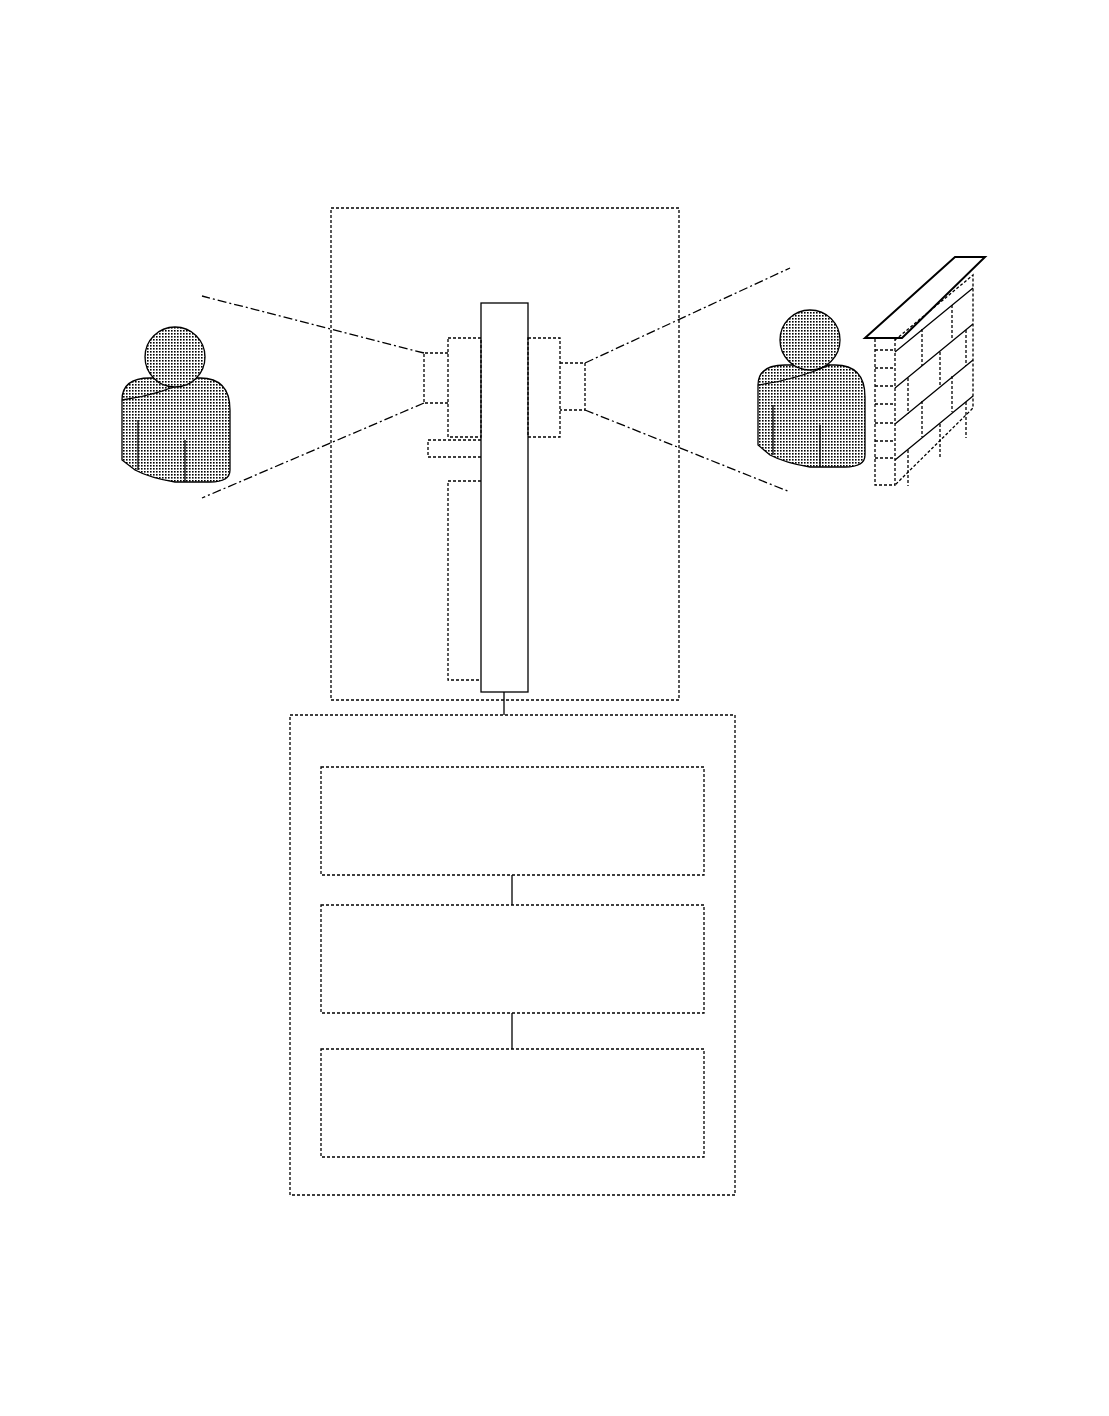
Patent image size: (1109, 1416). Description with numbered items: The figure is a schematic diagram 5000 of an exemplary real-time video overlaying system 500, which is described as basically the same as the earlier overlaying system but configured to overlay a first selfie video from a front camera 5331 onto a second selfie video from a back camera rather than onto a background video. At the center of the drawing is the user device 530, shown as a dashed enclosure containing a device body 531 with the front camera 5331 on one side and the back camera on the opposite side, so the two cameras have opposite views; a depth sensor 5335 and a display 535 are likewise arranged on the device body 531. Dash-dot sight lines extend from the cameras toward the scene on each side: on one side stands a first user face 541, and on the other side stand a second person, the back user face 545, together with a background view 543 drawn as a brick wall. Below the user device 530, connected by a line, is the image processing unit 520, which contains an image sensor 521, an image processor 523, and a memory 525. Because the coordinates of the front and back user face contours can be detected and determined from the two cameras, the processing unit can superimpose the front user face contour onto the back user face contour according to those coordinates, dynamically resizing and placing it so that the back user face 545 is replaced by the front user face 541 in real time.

The schematic diagram 5000 is at (550, 30).
The real-time video overlaying system 500 is at (441, 163).
The optical module 530 is at (329, 214).
The image sensor substrate / main body 531 is at (505, 302).
The front camera 5331 is at (465, 337).
The second lens unit 5335 is at (543, 337).
The auxiliary module 535 is at (448, 578).
The processing unit 520 is at (290, 810).
The image sensor 521 is at (512, 821).
The processor 523 is at (512, 959).
The memory 525 is at (512, 1103).
The first object (person) 541 is at (162, 322).
The wall 543 is at (932, 273).
The second object (person) 545 is at (825, 312).